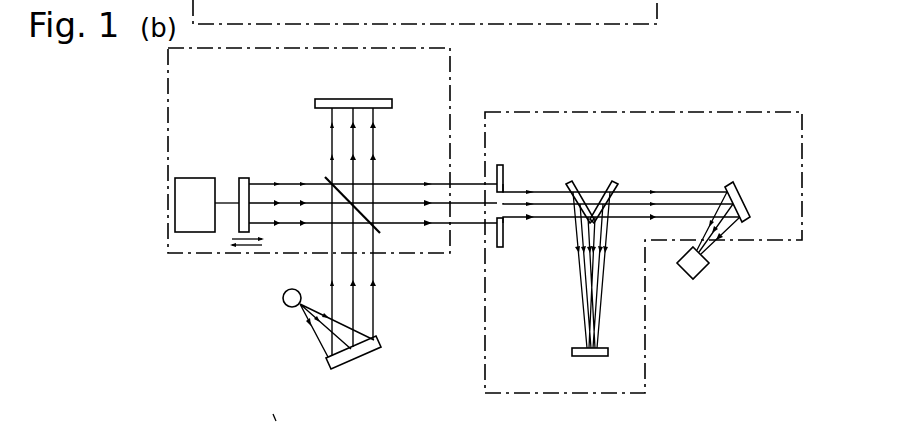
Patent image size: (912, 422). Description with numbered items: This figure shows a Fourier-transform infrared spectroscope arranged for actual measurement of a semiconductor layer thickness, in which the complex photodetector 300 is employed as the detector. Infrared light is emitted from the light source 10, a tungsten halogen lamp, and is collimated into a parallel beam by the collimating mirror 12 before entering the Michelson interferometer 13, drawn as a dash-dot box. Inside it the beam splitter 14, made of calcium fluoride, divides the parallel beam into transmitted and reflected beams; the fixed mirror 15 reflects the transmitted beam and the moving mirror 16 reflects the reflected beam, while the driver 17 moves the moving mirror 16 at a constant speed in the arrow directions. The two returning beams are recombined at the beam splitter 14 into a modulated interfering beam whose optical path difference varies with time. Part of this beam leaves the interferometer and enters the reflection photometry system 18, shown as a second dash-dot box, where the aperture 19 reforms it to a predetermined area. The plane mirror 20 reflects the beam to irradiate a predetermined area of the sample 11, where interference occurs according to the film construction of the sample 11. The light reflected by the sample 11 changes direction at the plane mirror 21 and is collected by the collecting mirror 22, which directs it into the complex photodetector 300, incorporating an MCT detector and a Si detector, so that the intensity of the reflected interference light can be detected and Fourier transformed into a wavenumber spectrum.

The light source 10 is at (283, 298).
The sample 11 is at (574, 350).
The collimating mirror 12 is at (382, 350).
The Michelson interferometer 13 is at (450, 73).
The beam splitter 14 is at (333, 183).
The fixed mirror 15 is at (357, 99).
The moving mirror 16 is at (244, 178).
The driver 17 is at (195, 178).
The reflection photometry system 18 is at (620, 112).
The aperture 19 is at (503, 172).
The plane mirror 20 is at (572, 182).
The plane mirror 21 is at (616, 183).
The collecting mirror 22 is at (737, 190).
The complex photodetector 300 is at (700, 277).